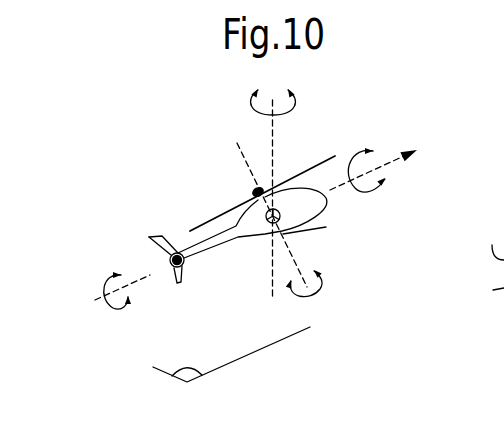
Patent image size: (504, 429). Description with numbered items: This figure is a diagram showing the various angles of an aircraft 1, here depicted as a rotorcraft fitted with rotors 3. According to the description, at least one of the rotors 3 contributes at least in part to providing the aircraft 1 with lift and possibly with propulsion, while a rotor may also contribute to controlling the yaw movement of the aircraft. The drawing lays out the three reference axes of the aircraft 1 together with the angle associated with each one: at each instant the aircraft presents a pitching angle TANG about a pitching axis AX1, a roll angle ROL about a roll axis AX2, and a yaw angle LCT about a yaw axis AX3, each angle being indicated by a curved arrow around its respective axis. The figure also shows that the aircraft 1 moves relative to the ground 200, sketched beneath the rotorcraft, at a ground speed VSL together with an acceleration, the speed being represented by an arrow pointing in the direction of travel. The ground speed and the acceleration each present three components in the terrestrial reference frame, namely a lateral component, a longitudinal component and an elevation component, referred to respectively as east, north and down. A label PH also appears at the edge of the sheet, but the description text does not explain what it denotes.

The aircraft 1 is at (216, 176).
The rotors 3 is at (289, 172).
The ground 200 is at (173, 377).
The yaw angle LCT is at (246, 184).
The pitching axis AX1 is at (326, 227).
The roll axis AX2 is at (147, 278).
The yaw axis AX3 is at (273, 284).
The pitching angle TANG is at (343, 286).
The roll angle ROL is at (88, 285).
The ground speed VSL is at (416, 154).
The horizontal plane PH is at (491, 253).